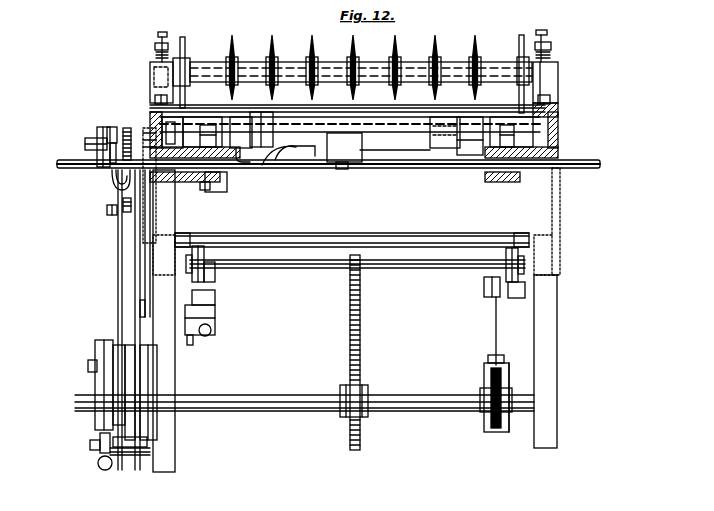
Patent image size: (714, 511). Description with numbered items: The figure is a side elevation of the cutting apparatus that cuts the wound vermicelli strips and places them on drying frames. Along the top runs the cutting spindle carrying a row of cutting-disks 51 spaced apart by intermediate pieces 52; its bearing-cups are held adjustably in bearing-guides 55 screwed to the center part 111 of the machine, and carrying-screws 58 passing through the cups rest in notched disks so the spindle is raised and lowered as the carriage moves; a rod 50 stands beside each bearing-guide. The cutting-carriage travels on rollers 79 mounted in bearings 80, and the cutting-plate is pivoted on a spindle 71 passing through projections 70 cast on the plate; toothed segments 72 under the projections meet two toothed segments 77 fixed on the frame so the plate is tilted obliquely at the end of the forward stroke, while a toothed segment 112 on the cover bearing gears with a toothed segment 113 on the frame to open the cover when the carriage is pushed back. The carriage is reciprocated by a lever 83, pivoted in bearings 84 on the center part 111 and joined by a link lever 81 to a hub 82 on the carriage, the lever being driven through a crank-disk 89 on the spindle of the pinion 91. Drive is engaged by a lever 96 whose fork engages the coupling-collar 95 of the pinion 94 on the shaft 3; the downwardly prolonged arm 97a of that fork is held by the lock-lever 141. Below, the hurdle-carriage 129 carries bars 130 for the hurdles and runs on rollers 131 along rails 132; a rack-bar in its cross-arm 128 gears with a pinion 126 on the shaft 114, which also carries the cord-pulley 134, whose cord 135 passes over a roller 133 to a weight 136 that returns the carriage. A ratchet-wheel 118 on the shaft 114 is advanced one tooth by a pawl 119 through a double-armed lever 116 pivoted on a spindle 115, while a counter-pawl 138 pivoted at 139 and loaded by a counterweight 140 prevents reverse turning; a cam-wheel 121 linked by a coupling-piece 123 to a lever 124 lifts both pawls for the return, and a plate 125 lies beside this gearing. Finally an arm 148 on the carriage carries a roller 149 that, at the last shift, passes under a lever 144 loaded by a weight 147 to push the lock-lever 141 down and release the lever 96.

The shaft 3 is at (56, 167).
The rod 50 is at (184, 40).
The cutting-disks 51 is at (356, 47).
The intermediate pieces 52 is at (244, 64).
The bearing-guides 55 is at (151, 88).
The screws 58 is at (162, 31).
The projections 70 is at (268, 165).
The spindle 71 is at (400, 128).
The toothed segments 72 is at (468, 116).
The toothed segments 77 is at (236, 178).
The rollers 79 is at (151, 116).
The bearings 80 is at (177, 117).
The link lever 81 is at (358, 170).
The hub 82 is at (358, 116).
The lever 83 is at (303, 162).
The bearings 84 is at (164, 185).
The crank-disk 89 is at (216, 184).
The pinion 91 is at (120, 128).
The pinion 94 is at (132, 138).
The coupling-collar 95 is at (104, 137).
The lever 96 is at (86, 145).
The downwardly-prolonged arm 97a is at (110, 185).
The center part 111 is at (545, 204).
The toothed segment 112 is at (208, 117).
The toothed segment 113 is at (355, 132).
The shaft 114 is at (395, 395).
The spindle 115 is at (106, 210).
The double-armed lever 116 is at (118, 314).
The ratchet-wheel 118 is at (68, 369).
The pawl 119 is at (96, 353).
The cam-wheel 121 is at (137, 456).
The coupling-piece 123 is at (150, 441).
The lever 124 is at (134, 248).
The plate 125 is at (150, 360).
The pinion 126 is at (350, 353).
The cross-arm 128 is at (357, 274).
The hurdle-carriage 129 is at (512, 245).
The bars 130 is at (340, 246).
The rollers 131 is at (199, 250).
The rails 132 is at (216, 272).
The roller 133 is at (486, 292).
The cord-pulley 134 is at (486, 420).
The cord 135 is at (494, 332).
The weight 136 is at (484, 380).
The counter-pawl 138 is at (100, 437).
The pivot 139 is at (92, 443).
The counterweight 140 is at (98, 464).
The lock-lever 141 is at (148, 287).
The lever 144 is at (212, 320).
The weight 147 is at (190, 345).
The arm 148 is at (209, 300).
The roller 149 is at (210, 336).